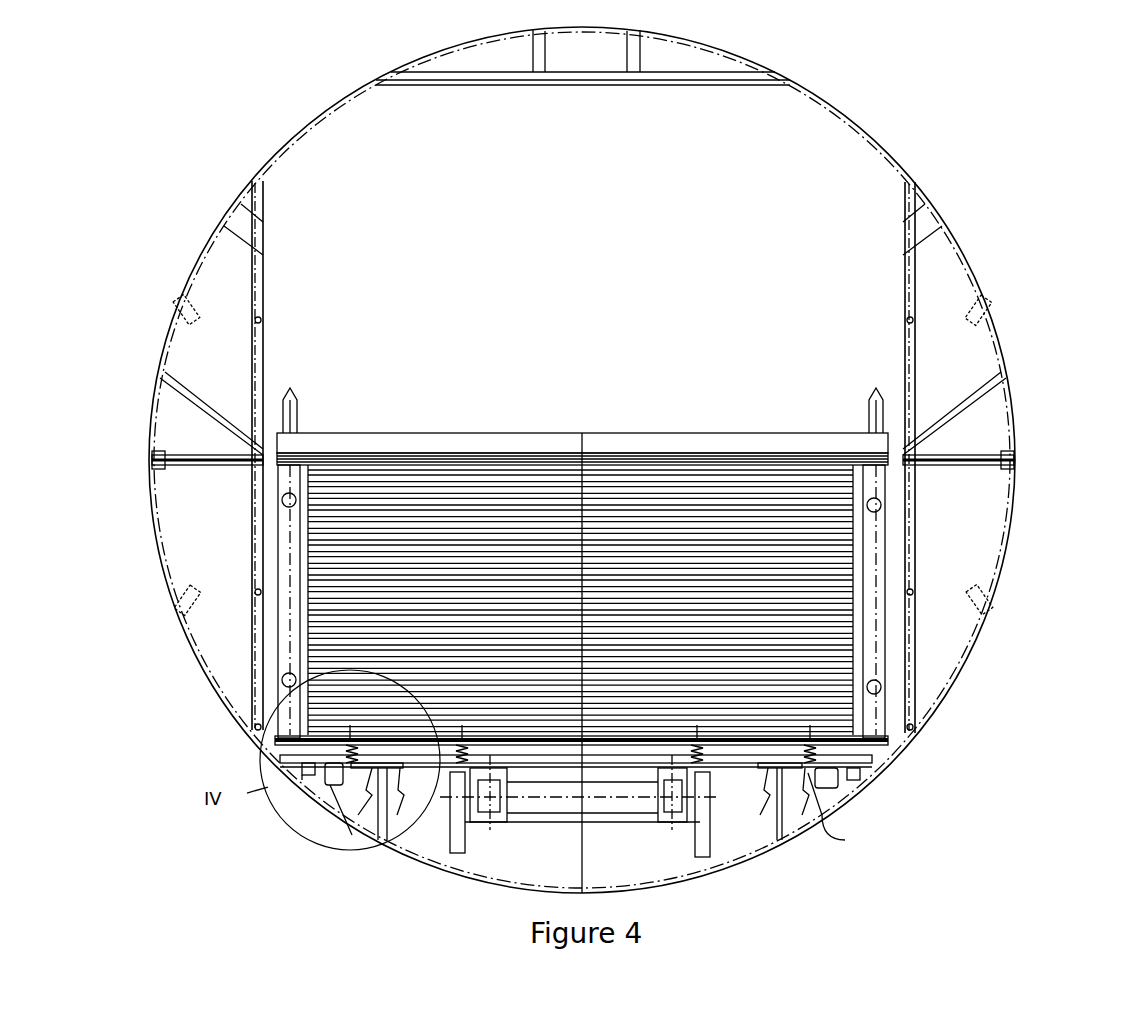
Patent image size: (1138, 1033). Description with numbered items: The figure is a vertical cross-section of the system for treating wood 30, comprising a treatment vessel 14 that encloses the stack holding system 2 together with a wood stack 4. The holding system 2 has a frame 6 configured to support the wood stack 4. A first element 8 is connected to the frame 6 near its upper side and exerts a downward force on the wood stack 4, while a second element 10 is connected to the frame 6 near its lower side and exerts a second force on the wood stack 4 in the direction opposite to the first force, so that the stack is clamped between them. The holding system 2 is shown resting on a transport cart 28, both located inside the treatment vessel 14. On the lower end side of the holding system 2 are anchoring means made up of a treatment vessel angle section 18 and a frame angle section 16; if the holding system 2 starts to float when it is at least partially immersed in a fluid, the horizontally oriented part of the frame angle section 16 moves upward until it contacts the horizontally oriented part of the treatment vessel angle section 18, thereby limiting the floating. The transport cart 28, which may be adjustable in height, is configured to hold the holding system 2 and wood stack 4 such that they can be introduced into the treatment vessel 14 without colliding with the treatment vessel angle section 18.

The stack holding system 2 is at (656, 393).
The wood stack 4 is at (455, 470).
The frame 6 is at (738, 445).
The first element 8 is at (390, 460).
The second element 10 is at (452, 752).
The treatment vessel 14 is at (978, 287).
The frame angle section 16 is at (388, 840).
The treatment vessel angle section 18 is at (373, 767).
The transport cart 28 is at (537, 813).
The system for treating wood 30 is at (1030, 231).